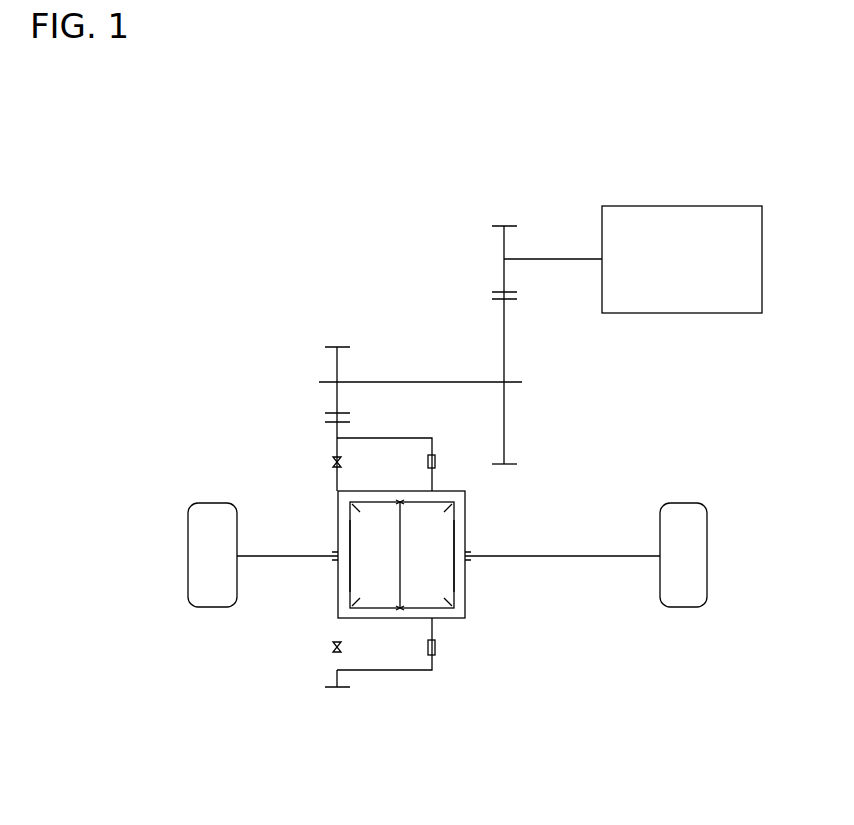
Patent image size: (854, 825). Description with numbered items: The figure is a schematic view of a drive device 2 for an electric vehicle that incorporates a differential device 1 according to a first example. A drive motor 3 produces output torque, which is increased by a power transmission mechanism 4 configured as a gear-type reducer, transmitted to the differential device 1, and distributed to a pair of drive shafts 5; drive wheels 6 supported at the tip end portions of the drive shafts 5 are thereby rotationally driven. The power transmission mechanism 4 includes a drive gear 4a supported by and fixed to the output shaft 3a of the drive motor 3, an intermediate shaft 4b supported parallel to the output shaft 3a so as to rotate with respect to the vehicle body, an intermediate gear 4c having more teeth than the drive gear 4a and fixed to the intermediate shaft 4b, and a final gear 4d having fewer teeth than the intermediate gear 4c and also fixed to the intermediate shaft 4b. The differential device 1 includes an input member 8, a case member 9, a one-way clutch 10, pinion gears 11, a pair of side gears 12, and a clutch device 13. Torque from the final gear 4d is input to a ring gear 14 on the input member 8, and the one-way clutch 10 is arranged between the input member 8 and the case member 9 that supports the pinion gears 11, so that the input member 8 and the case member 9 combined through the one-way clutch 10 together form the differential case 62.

The differential device 1 is at (474, 648).
The drive device 2 is at (282, 230).
The drive motor 3 is at (696, 215).
The output shaft 3a is at (549, 257).
The power transmission mechanism 4 is at (392, 380).
The drive gear 4a is at (501, 223).
The intermediate shaft 4b is at (444, 380).
The intermediate gear 4c is at (506, 425).
The final gear 4d is at (334, 344).
The drive shafts 5 is at (272, 560).
The drive wheels 6 is at (213, 597).
The input member 8 is at (334, 436).
The case member 9 is at (334, 612).
The one-way clutch 10 is at (333, 462).
The pinion gears 11 is at (414, 490).
The side gears 12 is at (337, 532).
The clutch device 13 is at (433, 656).
The ring gear 14 is at (339, 690).
The differential case 62 is at (402, 620).